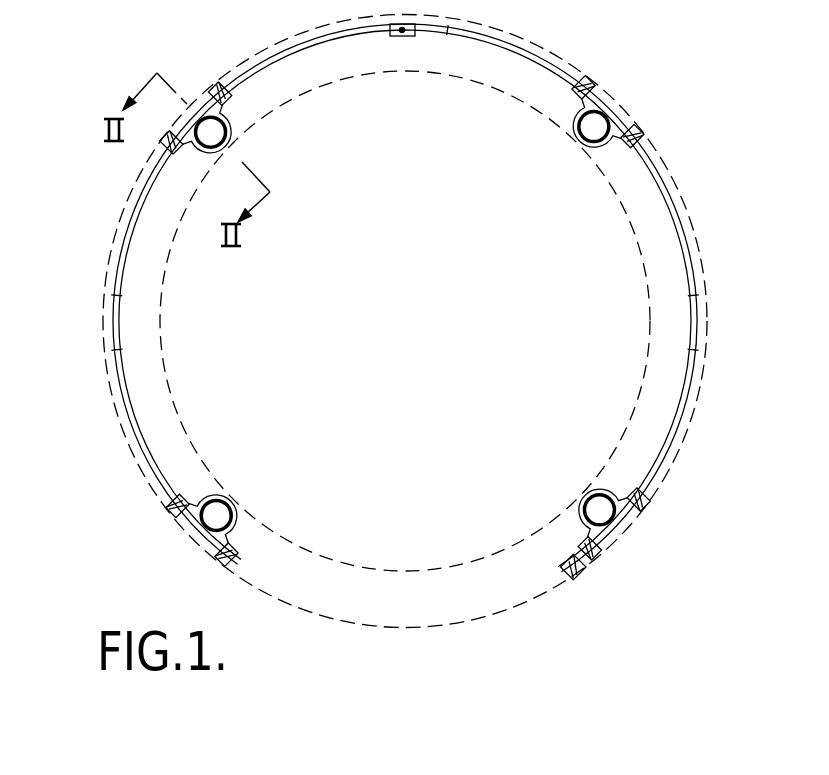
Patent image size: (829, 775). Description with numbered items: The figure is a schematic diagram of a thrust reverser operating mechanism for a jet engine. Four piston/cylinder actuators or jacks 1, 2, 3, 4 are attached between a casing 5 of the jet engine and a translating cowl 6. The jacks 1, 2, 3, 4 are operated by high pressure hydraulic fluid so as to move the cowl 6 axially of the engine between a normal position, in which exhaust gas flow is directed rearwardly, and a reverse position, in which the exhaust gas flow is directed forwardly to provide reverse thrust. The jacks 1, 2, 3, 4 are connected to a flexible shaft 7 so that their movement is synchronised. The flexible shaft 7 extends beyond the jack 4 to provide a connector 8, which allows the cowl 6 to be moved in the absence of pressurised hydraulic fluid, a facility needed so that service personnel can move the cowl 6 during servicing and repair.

The jack 1 is at (230, 497).
The jack 2 is at (225, 112).
The jack 3 is at (597, 132).
The jack 4 is at (595, 508).
The casing 5 is at (487, 631).
The translating cowl 6 is at (430, 568).
The flexible shaft 7 is at (703, 327).
The connector 8 is at (583, 573).